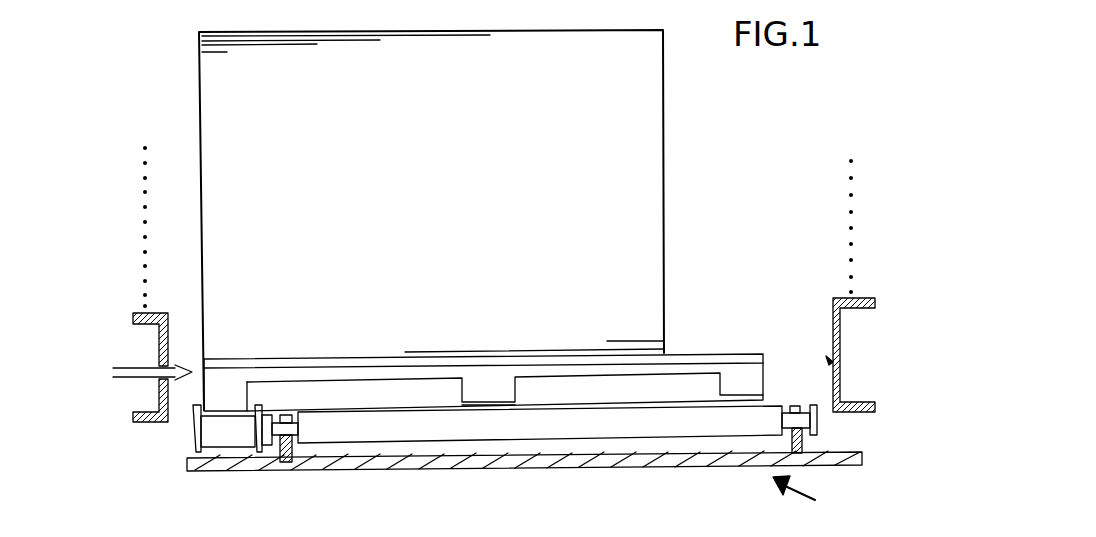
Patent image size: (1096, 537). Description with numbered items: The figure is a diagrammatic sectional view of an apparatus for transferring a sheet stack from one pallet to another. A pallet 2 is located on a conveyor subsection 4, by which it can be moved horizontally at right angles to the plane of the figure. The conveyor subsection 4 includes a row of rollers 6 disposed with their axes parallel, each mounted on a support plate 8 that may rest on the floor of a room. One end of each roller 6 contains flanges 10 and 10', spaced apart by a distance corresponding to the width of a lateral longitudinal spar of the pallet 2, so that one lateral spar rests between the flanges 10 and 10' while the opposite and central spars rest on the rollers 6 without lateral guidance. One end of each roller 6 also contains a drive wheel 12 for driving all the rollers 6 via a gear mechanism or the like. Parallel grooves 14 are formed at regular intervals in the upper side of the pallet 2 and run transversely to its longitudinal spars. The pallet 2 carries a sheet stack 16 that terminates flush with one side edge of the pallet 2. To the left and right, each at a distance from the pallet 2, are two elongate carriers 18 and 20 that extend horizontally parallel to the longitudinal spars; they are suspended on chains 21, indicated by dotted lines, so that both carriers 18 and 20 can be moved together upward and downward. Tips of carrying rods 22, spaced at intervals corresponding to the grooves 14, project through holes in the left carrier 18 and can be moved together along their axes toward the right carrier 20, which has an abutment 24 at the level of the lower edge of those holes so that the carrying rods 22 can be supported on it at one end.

The pallet 2 is at (700, 366).
The conveyor subsection 4 is at (803, 496).
The rollers 6 is at (377, 432).
The support plate 8 is at (562, 463).
The flange 10 is at (216, 457).
The flange 10' is at (274, 467).
The drive wheel 12 is at (817, 423).
The parallel grooves 14 is at (688, 355).
The sheet stack 16 is at (643, 127).
The carrier 18 is at (148, 425).
The carrier 20 is at (840, 337).
The chains 21 is at (145, 205).
The carrying rods 22 is at (128, 370).
The abutment 24 is at (829, 361).